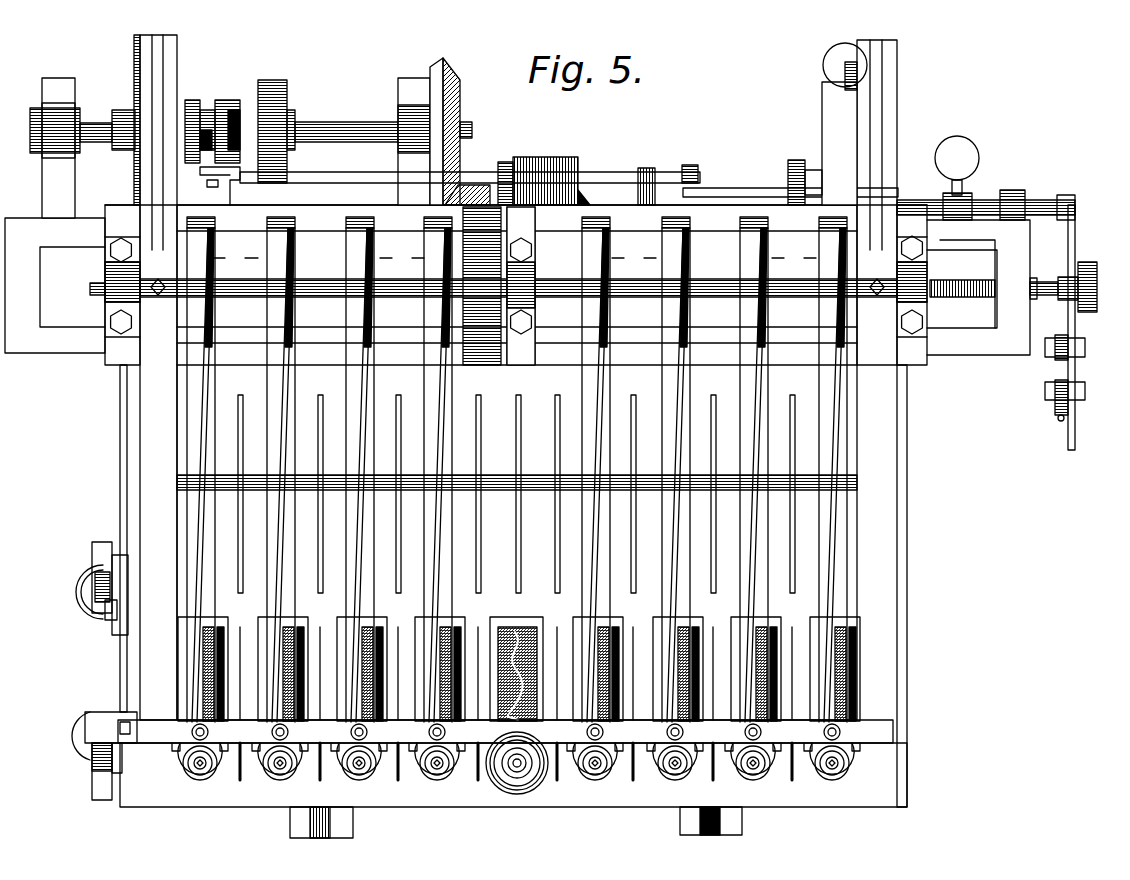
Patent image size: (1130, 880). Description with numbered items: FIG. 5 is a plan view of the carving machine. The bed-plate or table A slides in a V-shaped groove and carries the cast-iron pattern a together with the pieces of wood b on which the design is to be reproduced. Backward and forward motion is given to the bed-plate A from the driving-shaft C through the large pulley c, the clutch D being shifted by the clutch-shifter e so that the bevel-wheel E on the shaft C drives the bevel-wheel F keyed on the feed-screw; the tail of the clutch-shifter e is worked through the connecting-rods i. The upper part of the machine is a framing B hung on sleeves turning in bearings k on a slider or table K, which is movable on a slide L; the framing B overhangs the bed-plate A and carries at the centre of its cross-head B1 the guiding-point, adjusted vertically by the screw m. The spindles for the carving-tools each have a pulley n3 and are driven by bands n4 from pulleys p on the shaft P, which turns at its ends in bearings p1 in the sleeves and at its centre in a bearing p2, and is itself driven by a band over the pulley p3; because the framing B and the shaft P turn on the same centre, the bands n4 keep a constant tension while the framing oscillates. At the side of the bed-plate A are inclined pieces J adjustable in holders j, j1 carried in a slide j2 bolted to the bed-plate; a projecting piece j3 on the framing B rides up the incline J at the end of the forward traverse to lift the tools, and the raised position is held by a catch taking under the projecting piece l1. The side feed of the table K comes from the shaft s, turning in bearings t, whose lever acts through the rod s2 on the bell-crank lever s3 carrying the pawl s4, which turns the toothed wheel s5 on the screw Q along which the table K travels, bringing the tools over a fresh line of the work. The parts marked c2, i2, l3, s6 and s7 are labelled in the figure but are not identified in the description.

The bed-plate or table A is at (516, 492).
The framing B is at (513, 421).
The cross-head B1 is at (512, 779).
The shaft P is at (518, 282).
The pulleys p is at (514, 259).
The end bearings p1 is at (932, 292).
The center bearing p2 is at (312, 286).
The pulley p3 is at (482, 286).
The slider or table K is at (516, 285).
The bearings k is at (950, 312).
The slide L is at (517, 286).
The screw Q is at (960, 290).
The bands n4 is at (517, 469).
The pulley n3 is at (516, 772).
The screw m is at (517, 766).
The pieces of wood or other material b is at (810, 618).
The pattern a is at (516, 660).
The inclined piece J is at (98, 588).
The holder j is at (111, 613).
The holder j1 is at (112, 768).
The slide j2 is at (125, 807).
The projecting piece j3 is at (86, 742).
The pulley c is at (130, 72).
The gear wheel c2 is at (276, 121).
The driving-shaft C is at (346, 120).
The clutch D is at (212, 122).
The clutch-shifter e is at (240, 172).
The bevel-wheel E is at (444, 119).
The connecting-rods i is at (569, 173).
The drum i2 is at (598, 181).
The bevel-wheel F is at (591, 194).
The projecting piece l1 is at (822, 143).
The wheel l3 is at (845, 66).
The shaft s is at (986, 178).
The bearings t is at (1012, 196).
The rod s2 is at (1060, 363).
The bell-crank lever s3 is at (1058, 292).
The pawl s4 is at (1085, 280).
The toothed wheel s5 is at (1090, 265).
The block s6 is at (1072, 367).
The bar s7 is at (1076, 432).